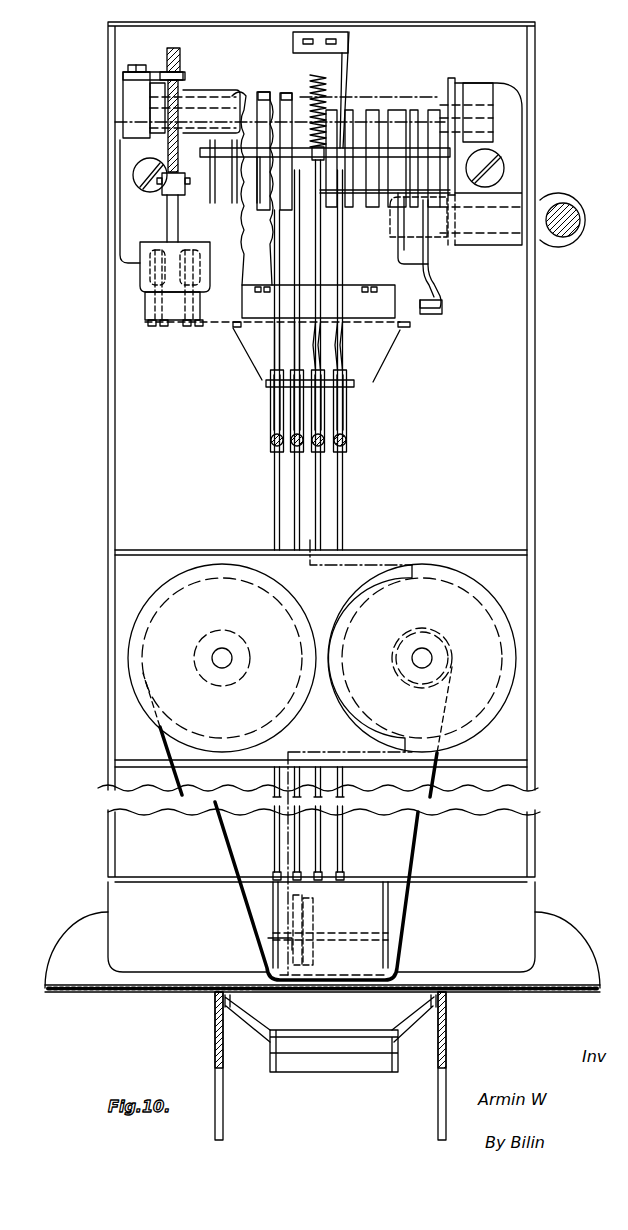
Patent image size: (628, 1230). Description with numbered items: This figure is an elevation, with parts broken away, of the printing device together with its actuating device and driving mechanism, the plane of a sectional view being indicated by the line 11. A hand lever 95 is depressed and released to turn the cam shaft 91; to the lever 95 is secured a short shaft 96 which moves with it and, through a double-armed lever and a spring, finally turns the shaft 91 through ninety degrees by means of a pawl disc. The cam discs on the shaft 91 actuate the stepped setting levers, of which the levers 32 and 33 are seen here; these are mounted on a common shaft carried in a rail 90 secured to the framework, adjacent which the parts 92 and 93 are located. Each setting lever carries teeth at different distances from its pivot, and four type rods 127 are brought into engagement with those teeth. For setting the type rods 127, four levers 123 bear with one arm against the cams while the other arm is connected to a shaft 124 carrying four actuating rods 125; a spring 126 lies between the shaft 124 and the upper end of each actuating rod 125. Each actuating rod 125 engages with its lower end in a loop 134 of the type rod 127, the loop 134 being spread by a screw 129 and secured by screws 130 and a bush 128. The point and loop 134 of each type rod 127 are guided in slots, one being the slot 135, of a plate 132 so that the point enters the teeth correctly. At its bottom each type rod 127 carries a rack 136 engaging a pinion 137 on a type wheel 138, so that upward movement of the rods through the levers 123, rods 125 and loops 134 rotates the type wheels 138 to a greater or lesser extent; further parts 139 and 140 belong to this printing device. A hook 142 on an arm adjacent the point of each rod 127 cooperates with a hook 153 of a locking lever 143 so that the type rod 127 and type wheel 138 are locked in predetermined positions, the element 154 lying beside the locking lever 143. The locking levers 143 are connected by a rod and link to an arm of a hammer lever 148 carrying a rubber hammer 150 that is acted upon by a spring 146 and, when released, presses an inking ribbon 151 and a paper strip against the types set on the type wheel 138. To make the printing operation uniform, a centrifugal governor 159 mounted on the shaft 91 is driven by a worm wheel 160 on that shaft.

The section line 11- 11 is at (312, 250).
The setting lever 32 is at (283, 93).
The setting lever 33 is at (256, 92).
The rail 90 is at (503, 142).
The shaft 91 is at (368, 96).
The solenoid housing 92 is at (130, 133).
The insert block 93 is at (493, 110).
The hand lever 95 is at (563, 204).
The short shaft 96 is at (538, 235).
The lever 123 is at (257, 150).
The shaft 124 is at (374, 180).
The actuating rod 125 is at (350, 343).
The spring 126 is at (318, 80).
The type rod 127 is at (280, 503).
The bush 128 is at (348, 418).
The screw 129 is at (297, 410).
The screws 130 is at (295, 441).
The plate 132 is at (266, 378).
The loop 134 is at (338, 396).
The slot 135 is at (295, 350).
The rack 136 is at (300, 957).
The pinion 137 is at (295, 930).
The type wheel 138 is at (298, 906).
The tank 139 is at (378, 905).
The liquid level 140 is at (393, 940).
The hook 142 is at (410, 325).
The locking lever 143 is at (435, 262).
The spring 146 is at (350, 42).
The hammer lever 148 is at (243, 1034).
The rubber hammer 150 is at (323, 1043).
The inking ribbon 151 is at (221, 828).
The hook 153 is at (443, 310).
The lever 154 is at (395, 286).
The centrifugal governor 159 is at (172, 190).
The worm wheel 160 is at (182, 58).